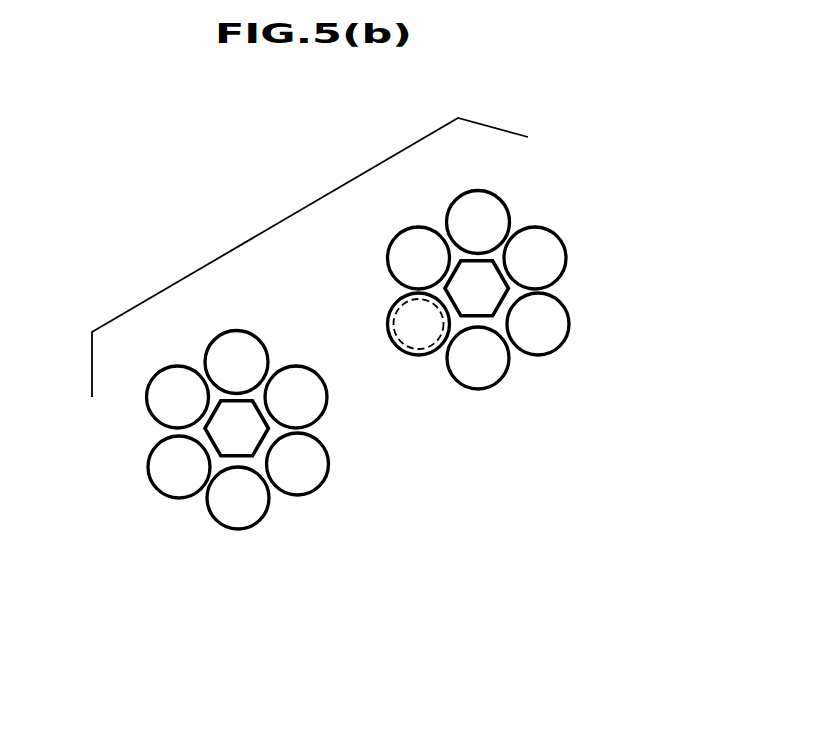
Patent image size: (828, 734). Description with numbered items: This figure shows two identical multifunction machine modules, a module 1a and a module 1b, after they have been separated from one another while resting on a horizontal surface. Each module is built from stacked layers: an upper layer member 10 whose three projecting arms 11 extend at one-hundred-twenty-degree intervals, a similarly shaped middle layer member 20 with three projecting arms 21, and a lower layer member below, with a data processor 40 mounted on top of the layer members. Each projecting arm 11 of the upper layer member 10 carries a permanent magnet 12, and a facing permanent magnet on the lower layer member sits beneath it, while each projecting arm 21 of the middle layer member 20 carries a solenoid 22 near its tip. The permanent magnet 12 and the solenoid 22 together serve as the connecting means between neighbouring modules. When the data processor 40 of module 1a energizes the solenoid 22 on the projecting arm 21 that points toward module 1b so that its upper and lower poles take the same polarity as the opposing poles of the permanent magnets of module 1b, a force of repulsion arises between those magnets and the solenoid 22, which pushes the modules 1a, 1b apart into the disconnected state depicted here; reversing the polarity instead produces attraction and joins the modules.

The upper layer member 10 is at (377, 390).
The module 1a is at (237, 411).
The module 1b is at (454, 308).
The middle layer member 20 is at (266, 529).
The projecting arm 21 is at (322, 410).
The solenoid 22 is at (298, 373).
The data processor 40 is at (218, 447).
The projecting arm 11 is at (397, 300).
The permanent magnet 12 is at (430, 338).